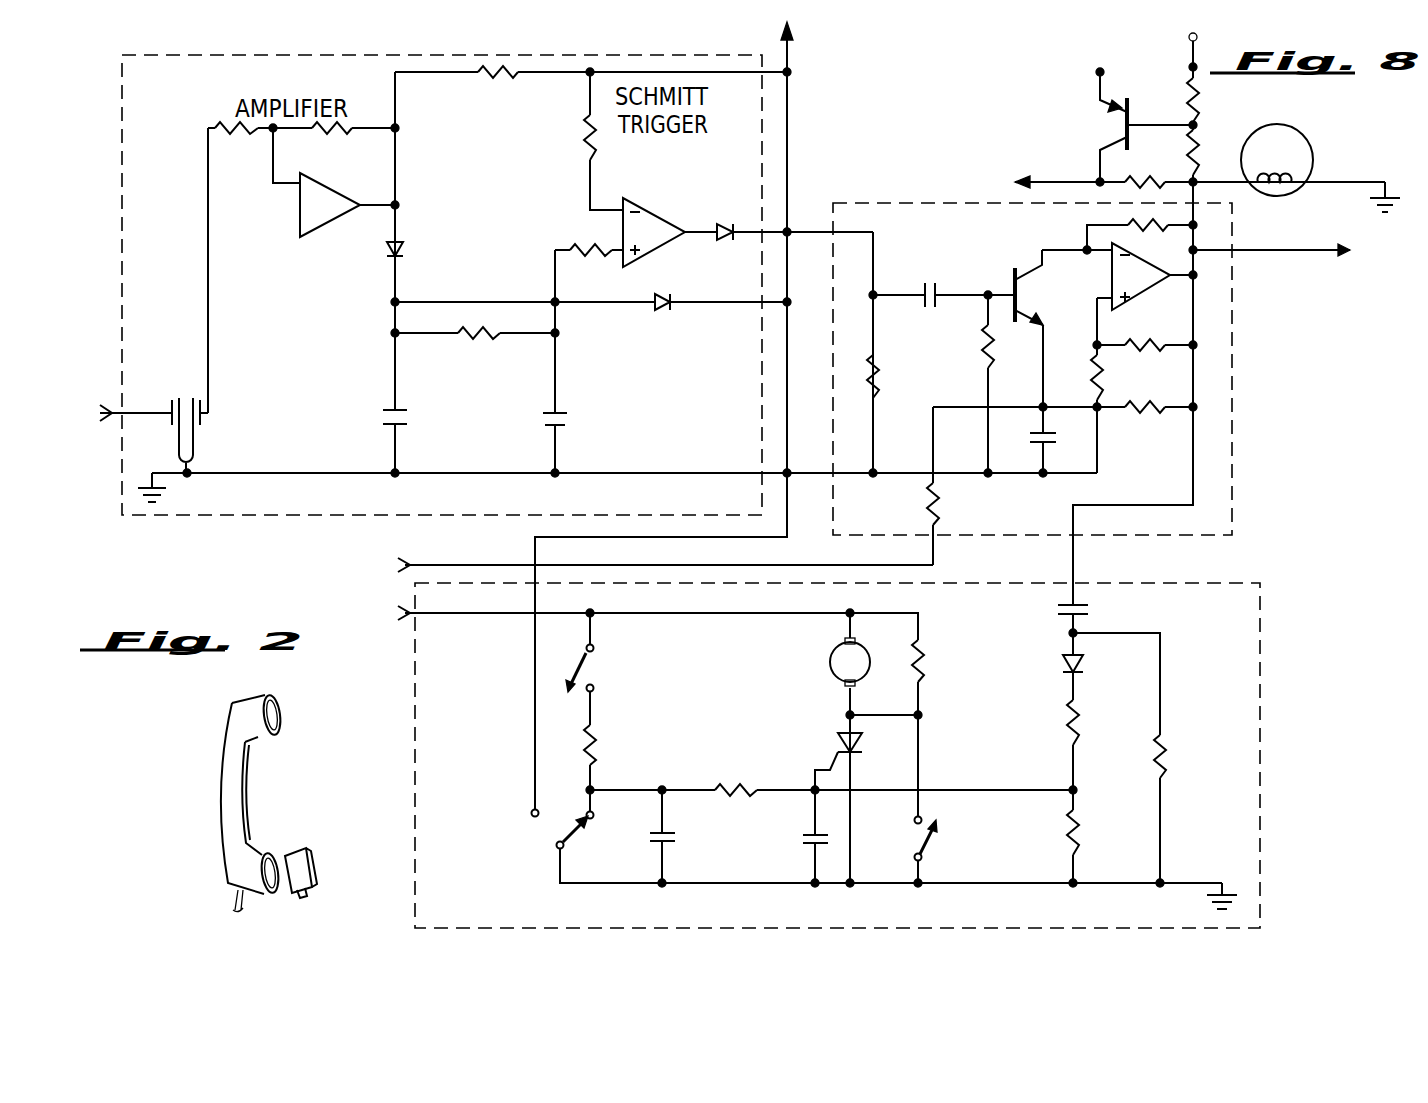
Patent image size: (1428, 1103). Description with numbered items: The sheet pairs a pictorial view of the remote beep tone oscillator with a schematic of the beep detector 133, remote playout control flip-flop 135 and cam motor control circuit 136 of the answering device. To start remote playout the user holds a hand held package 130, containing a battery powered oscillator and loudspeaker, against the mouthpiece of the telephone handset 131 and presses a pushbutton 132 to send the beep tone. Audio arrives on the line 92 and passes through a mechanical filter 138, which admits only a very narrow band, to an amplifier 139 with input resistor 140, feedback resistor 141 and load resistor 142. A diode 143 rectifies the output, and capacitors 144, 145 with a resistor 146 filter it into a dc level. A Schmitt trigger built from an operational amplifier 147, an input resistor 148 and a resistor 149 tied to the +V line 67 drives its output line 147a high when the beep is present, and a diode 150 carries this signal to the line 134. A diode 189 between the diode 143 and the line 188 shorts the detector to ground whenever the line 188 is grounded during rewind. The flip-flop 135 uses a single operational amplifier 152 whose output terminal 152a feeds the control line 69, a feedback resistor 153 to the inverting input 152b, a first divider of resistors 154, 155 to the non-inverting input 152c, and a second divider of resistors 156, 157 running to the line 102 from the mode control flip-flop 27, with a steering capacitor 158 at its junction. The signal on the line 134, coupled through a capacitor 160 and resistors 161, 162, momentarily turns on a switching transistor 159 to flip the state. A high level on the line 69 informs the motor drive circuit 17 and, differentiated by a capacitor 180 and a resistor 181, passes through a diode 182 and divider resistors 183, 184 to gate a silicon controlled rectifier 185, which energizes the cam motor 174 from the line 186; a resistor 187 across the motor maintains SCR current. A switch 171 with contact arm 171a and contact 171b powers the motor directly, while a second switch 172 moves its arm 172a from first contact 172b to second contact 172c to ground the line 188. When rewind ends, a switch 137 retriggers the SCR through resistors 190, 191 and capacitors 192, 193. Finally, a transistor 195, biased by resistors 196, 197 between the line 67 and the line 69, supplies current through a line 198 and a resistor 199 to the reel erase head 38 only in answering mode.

In FIG. 8, the beep detector 133 is at (442, 285).
In FIG. 8, the input resistor 140 is at (240, 135).
In FIG. 8, the feedback resistor 141 is at (330, 132).
In FIG. 8, the amplifier 139 is at (328, 233).
In FIG. 8, the diode 143 is at (406, 251).
In FIG. 8, the load resistor 142 is at (498, 76).
In FIG. 8, the resistor 149 is at (588, 141).
In FIG. 8, the input resistor 148 is at (578, 248).
In FIG. 8, the operational amplifier 147 is at (660, 254).
In FIG. 8, the amplifier output line 147a is at (689, 230).
In FIG. 8, the diode 150 is at (744, 198).
In FIG. 8, the diode 189 is at (670, 310).
In FIG. 8, the resistor 146 is at (480, 338).
In FIG. 8, the capacitor 145 is at (560, 415).
In FIG. 8, the capacitor 144 is at (386, 420).
In FIG. 8, the mechanical filter 138 is at (198, 444).
In FIG. 8, the line 92 is at (112, 417).
In FIG. 8, the line 188 is at (789, 100).
In FIG. 8, the line 134 is at (811, 230).
In FIG. 8, the +V line 67 is at (1175, 46).
In FIG. 8, the resistor 196 is at (1192, 100).
In FIG. 8, the resistor 197 is at (1194, 170).
In FIG. 8, the transistor 195 is at (1104, 132).
In FIG. 8, the line 198 is at (1067, 182).
In FIG. 8, the resistor 199 is at (1146, 182).
In FIG. 8, the reel erase head 38 is at (1266, 136).
In FIG. 8, the control line 69 is at (1310, 248).
In FIG. 8, the motor drive circuit 17 is at (1327, 293).
In FIG. 8, the resistor 153 is at (1124, 224).
In FIG. 8, the capacitor 160 is at (950, 284).
In FIG. 8, the switching transistor 159 is at (1010, 272).
In FIG. 8, the operational amplifier 152 is at (1140, 300).
In FIG. 8, the output terminal 152a is at (1202, 276).
In FIG. 8, the inverting input terminal 152b is at (1092, 262).
In FIG. 8, the non-inverting input 152c is at (1094, 307).
In FIG. 8, the resistor 161 is at (880, 376).
In FIG. 8, the resistor 162 is at (984, 346).
In FIG. 8, the steering capacitor 158 is at (1042, 427).
In FIG. 8, the resistor 155 is at (1092, 380).
In FIG. 8, the resistor 154 is at (1146, 350).
In FIG. 8, the resistor 156 is at (1148, 413).
In FIG. 8, the resistor 157 is at (928, 500).
In FIG. 8, the remote playout control flip-flop 135 is at (1208, 394).
In FIG. 8, the line 102 is at (480, 564).
In FIG. 8, the mode control flip-flop 27 is at (242, 555).
In FIG. 8, the cam motor control circuit 136 is at (837, 755).
In FIG. 8, the line 186 is at (402, 622).
In FIG. 8, the switch 137 is at (596, 672).
In FIG. 8, the resistor 190 is at (599, 748).
In FIG. 8, the second contact 172c is at (530, 812).
In FIG. 8, the first contact 172b is at (594, 816).
In FIG. 8, the switch arm 172a is at (566, 850).
In FIG. 8, the second switch 172 is at (542, 857).
In FIG. 8, the resistor 191 is at (737, 787).
In FIG. 8, the capacitor 192 is at (676, 838).
In FIG. 8, the capacitor 193 is at (806, 844).
In FIG. 8, the cam motor 174 is at (830, 668).
In FIG. 8, the silicon controlled rectifier 185 is at (836, 742).
In FIG. 8, the resistor 187 is at (922, 663).
In FIG. 8, the contact 171b is at (924, 824).
In FIG. 8, the contact arm 171a is at (928, 860).
In FIG. 8, the switch 171 is at (946, 848).
In FIG. 8, the capacitor 180 is at (1068, 614).
In FIG. 8, the diode 182 is at (1058, 670).
In FIG. 8, the resistor 183 is at (1079, 727).
In FIG. 8, the resistor 184 is at (1079, 832).
In FIG. 8, the resistor 181 is at (1162, 758).
In FIG. 2, the telephone handset 131 is at (228, 796).
In FIG. 2, the hand held package 130 is at (325, 850).
In FIG. 2, the pushbutton 132 is at (304, 898).